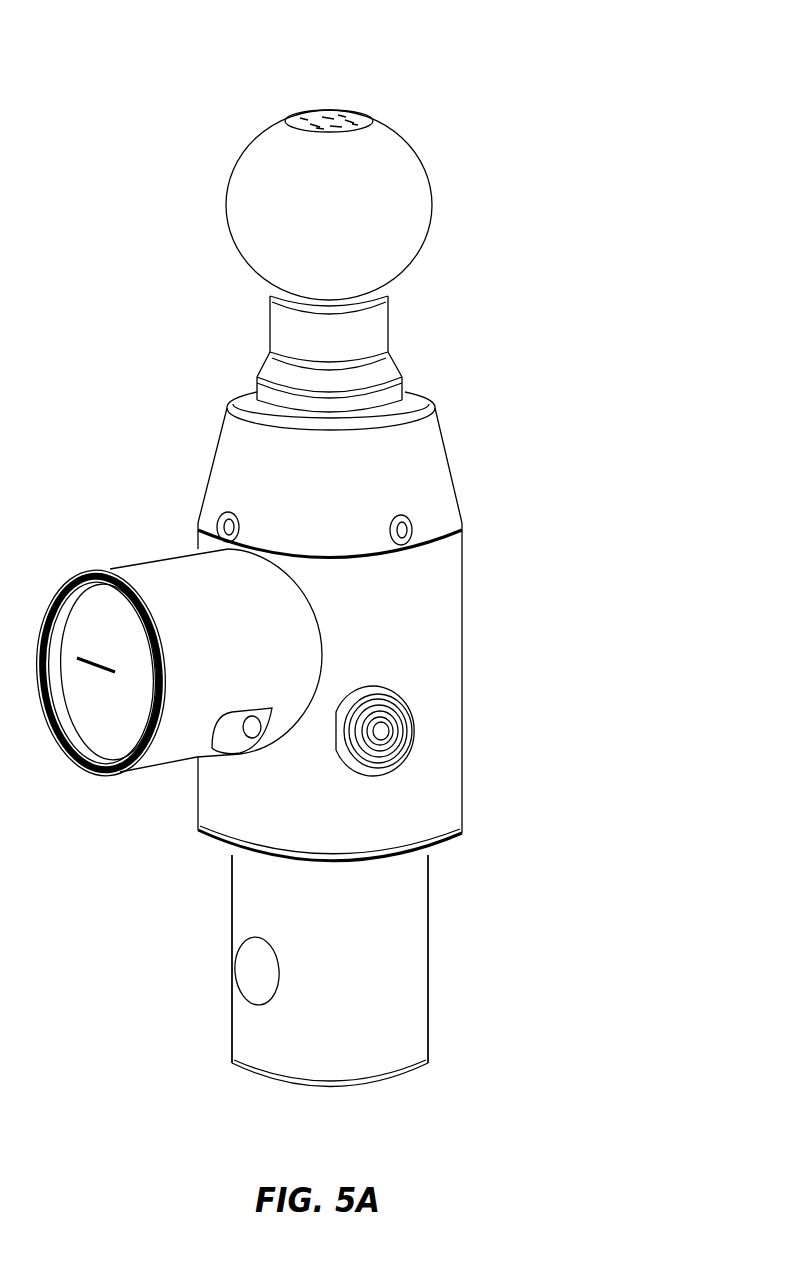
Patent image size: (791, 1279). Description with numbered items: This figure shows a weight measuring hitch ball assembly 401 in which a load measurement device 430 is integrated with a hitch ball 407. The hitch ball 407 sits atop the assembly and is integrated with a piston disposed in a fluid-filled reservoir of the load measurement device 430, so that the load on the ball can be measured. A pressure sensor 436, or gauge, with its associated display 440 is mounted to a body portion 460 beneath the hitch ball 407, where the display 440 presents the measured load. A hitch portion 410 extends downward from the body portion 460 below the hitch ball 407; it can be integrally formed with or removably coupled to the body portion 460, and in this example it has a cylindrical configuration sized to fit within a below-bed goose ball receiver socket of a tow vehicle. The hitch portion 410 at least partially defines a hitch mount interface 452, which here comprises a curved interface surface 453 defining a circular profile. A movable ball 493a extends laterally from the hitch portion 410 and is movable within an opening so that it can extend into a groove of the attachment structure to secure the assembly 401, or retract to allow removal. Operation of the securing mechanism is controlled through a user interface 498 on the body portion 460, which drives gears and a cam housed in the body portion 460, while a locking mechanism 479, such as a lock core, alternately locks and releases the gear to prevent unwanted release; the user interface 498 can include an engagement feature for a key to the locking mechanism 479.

The weight measuring hitch ball assembly 401 is at (145, 52).
The hitch ball 407 is at (440, 142).
The body portion 460 is at (468, 458).
The load measurement device 430 is at (137, 514).
The pressure sensor 436 is at (108, 548).
The display 440 is at (95, 733).
The locking mechanism 479 is at (408, 712).
The user interface 498 is at (405, 726).
The hitch portion 410 is at (452, 956).
The hitch mount interface 452 is at (192, 918).
The curved interface surface 453 is at (373, 897).
The movable ball 493a is at (242, 968).